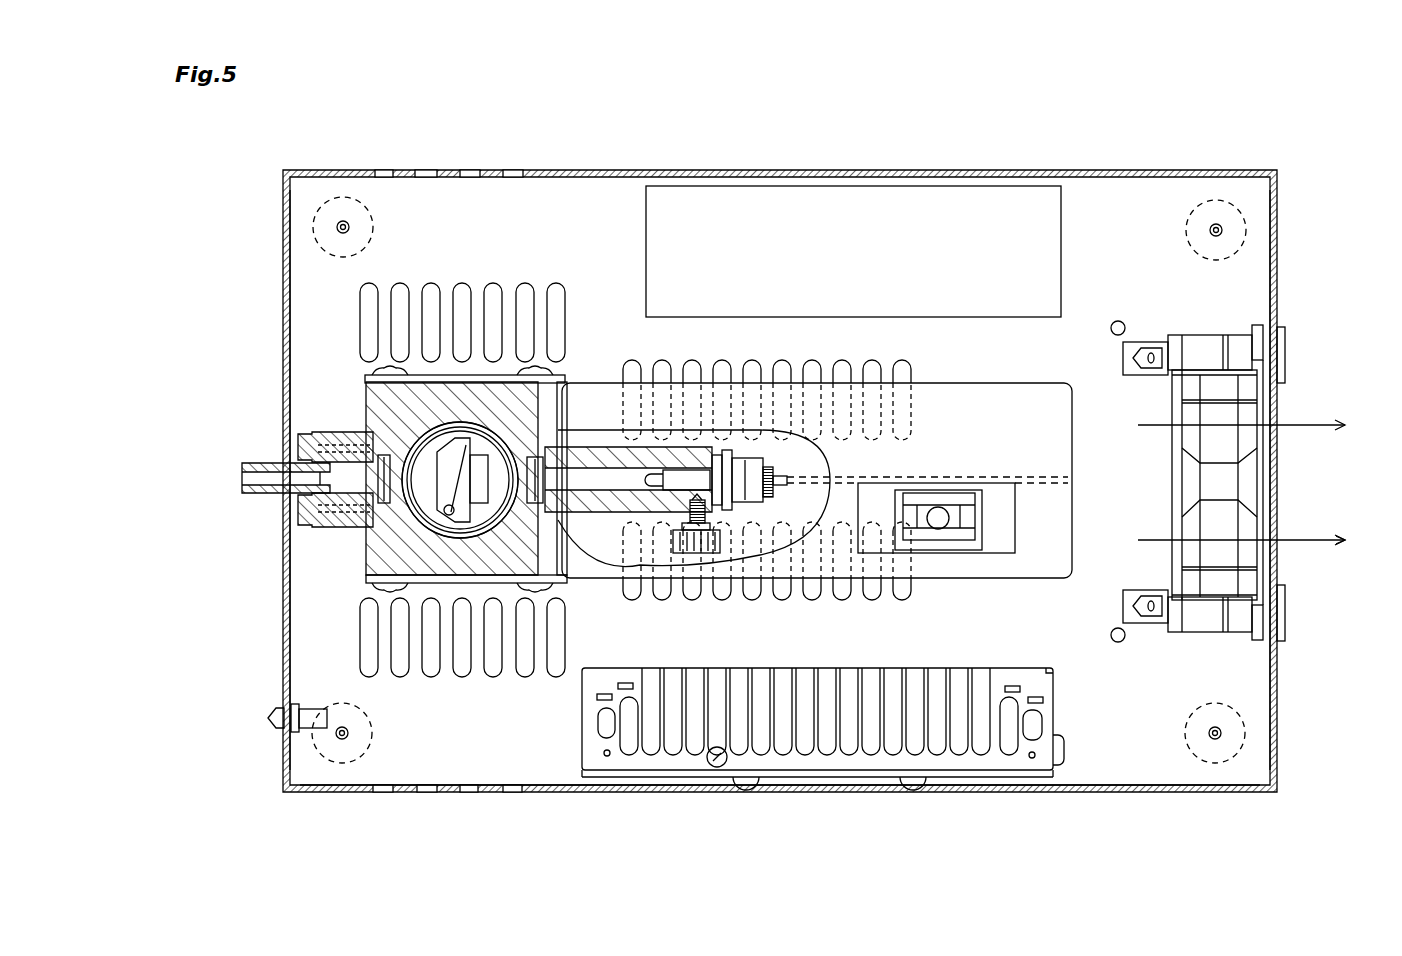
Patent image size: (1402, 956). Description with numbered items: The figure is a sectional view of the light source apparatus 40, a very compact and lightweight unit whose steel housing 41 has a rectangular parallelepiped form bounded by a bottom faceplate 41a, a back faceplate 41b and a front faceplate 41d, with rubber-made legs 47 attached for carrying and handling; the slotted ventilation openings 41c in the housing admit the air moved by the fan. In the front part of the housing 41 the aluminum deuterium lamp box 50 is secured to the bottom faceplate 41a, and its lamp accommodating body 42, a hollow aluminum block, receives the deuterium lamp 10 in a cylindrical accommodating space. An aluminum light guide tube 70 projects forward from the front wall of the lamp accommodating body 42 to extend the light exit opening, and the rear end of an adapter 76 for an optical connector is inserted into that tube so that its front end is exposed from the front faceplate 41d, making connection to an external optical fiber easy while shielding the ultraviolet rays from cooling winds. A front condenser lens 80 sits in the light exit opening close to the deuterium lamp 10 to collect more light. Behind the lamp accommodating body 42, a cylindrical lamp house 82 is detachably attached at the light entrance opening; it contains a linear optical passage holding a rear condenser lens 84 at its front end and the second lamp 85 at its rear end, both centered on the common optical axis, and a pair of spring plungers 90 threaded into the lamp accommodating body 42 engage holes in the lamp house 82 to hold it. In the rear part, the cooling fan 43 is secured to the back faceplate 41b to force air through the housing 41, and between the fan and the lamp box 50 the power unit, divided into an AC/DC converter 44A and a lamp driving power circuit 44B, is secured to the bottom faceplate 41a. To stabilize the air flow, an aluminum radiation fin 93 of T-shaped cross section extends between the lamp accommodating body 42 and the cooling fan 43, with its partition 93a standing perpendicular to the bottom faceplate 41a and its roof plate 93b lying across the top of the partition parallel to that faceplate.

The deuterium lamp 10 is at (410, 522).
The light source apparatus 40 is at (1178, 140).
The housing 41 is at (1277, 722).
The bottom faceplate 41a is at (395, 745).
The back faceplate 41b is at (1277, 300).
The ventilation slots 41c is at (635, 480).
The front faceplate 41d is at (283, 660).
The lamp accommodating body 42 is at (490, 400).
The cooling fan 43 is at (1230, 415).
The AC/DC converter 44A is at (703, 745).
The lamp driving power circuit 44B is at (795, 200).
The rubber-made legs 47 is at (313, 230).
The deuterium lamp box 50 is at (360, 400).
The light guide tube 70 is at (335, 527).
The adapter 76 is at (265, 463).
The condenser lens 80 is at (382, 505).
The lamp house 82 is at (597, 448).
The condenser lens 84 is at (548, 515).
The second lamp 85 is at (660, 478).
The spring plungers 90 is at (575, 560).
The radiation fin 93 is at (1075, 522).
The partition 93a is at (855, 470).
The roof plate 93b is at (985, 362).